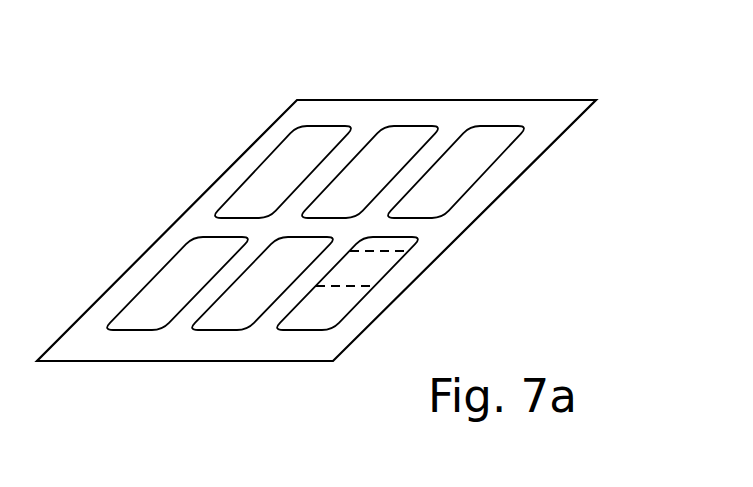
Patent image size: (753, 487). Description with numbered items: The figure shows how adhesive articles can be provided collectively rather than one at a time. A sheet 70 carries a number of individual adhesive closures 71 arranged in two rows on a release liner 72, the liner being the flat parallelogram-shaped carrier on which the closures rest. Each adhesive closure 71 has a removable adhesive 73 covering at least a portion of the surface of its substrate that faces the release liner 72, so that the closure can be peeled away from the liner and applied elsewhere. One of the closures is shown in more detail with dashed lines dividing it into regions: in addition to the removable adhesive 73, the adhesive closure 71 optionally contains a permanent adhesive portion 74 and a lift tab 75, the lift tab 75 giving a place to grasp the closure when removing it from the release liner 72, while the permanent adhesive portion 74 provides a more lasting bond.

The sheet 70 is at (317, 81).
The adhesive closure 71 is at (413, 133).
The release liner 72 is at (558, 115).
The removable adhesive 73 is at (398, 268).
The permanent adhesive portion 74 is at (355, 308).
The lift tab 75 is at (423, 243).